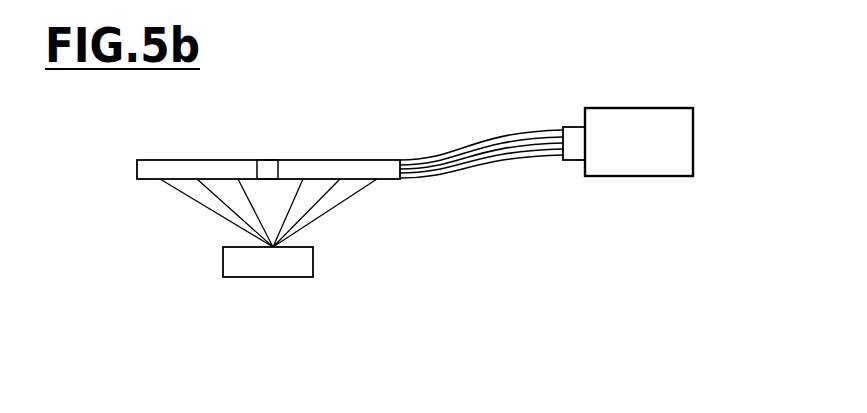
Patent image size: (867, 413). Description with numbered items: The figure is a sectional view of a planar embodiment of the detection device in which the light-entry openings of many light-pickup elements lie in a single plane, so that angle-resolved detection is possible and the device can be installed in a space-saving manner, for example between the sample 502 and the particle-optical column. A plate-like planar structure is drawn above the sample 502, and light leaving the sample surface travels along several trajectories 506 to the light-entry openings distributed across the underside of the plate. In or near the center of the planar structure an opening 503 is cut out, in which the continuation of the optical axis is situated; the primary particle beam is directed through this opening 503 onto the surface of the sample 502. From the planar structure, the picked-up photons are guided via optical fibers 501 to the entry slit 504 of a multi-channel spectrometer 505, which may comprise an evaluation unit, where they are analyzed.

The optical fiber 501 is at (475, 152).
The sample 502 is at (297, 263).
The opening 503 is at (272, 162).
The entry slit 504 is at (575, 152).
The multi-channel spectrometer 505 is at (680, 165).
The trajectory 506 is at (188, 195).